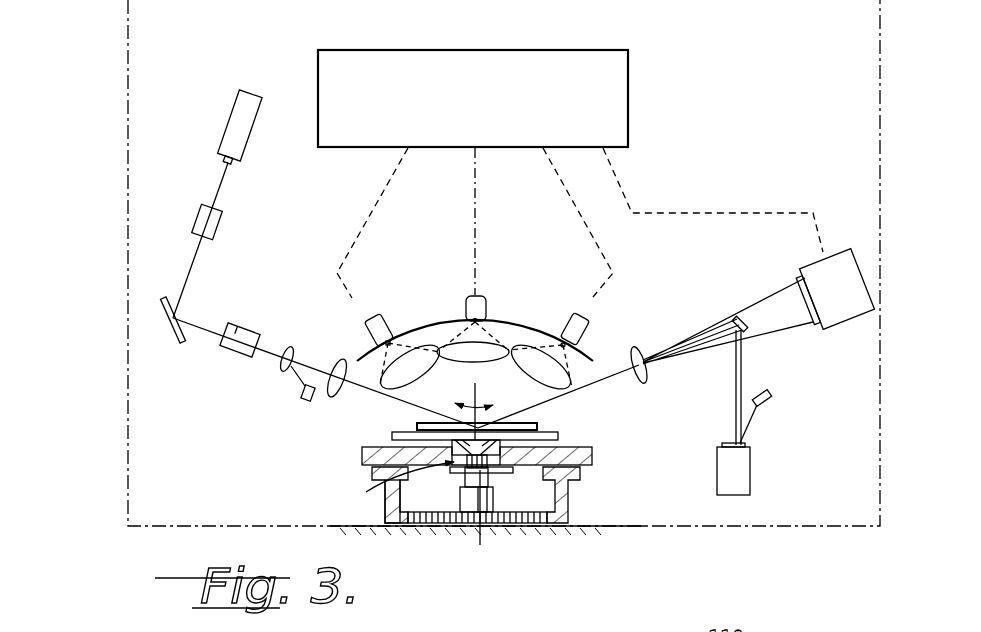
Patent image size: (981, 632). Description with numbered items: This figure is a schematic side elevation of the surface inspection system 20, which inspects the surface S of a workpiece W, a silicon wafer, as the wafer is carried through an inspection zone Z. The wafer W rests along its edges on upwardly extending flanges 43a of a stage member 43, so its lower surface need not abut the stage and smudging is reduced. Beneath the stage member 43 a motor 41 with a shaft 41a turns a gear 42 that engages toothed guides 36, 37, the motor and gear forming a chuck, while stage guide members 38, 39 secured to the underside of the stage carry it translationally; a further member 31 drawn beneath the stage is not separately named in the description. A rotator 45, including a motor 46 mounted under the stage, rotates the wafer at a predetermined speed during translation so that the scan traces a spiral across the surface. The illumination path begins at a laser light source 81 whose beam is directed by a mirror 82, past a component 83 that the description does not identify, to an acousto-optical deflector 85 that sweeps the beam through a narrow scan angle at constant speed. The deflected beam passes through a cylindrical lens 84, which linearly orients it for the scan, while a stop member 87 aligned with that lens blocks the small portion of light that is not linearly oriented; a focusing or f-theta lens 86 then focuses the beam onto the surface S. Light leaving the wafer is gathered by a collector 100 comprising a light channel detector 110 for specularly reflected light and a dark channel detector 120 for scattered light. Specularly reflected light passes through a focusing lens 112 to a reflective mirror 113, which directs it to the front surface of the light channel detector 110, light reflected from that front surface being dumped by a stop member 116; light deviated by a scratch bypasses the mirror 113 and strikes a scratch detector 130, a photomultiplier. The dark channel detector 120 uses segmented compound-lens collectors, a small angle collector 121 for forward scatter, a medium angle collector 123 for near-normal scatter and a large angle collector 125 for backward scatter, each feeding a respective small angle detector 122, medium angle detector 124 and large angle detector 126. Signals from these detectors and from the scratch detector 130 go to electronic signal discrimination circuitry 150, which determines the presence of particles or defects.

The surface inspection system 20 is at (116, 426).
The stage plate 31 is at (592, 457).
The guide 36 is at (568, 516).
The guide 37 is at (384, 511).
The stage guide member 38 is at (580, 476).
The stage guide member 39 is at (374, 478).
The motor 41 is at (523, 505).
The motor shaft 41a is at (497, 520).
The gear 42 is at (425, 518).
The stage member 43 is at (560, 434).
The flange 43a is at (533, 420).
The rotator 45 is at (458, 497).
The motor 46 is at (465, 528).
The light source 81 is at (232, 130).
The mirror 82 is at (176, 336).
The beam attenuator 83 is at (199, 220).
The cylindrical lens 84 is at (300, 312).
The deflector 85 is at (233, 328).
The optical lens 86 is at (332, 392).
The stop member 87 is at (303, 394).
The collector 100 is at (650, 156).
The light channel detector 110 is at (740, 470).
The focusing lens 112 is at (644, 381).
The reflective mirror 113 is at (742, 318).
The stop member 116 is at (769, 402).
The dark channel detector 120 is at (511, 206).
The small angle collector 121 is at (555, 367).
The small angle detector 122 is at (585, 326).
The medium angle collector 123 is at (497, 346).
The medium angle detector 124 is at (480, 296).
The large angle collector 125 is at (405, 366).
The large angle detector 126 is at (377, 340).
The scratch detector 130 is at (848, 316).
The electronic signal discrimination circuitry 150 is at (611, 55).
The surface S is at (430, 423).
The workpiece W is at (538, 429).
The inspection zone Z is at (638, 288).